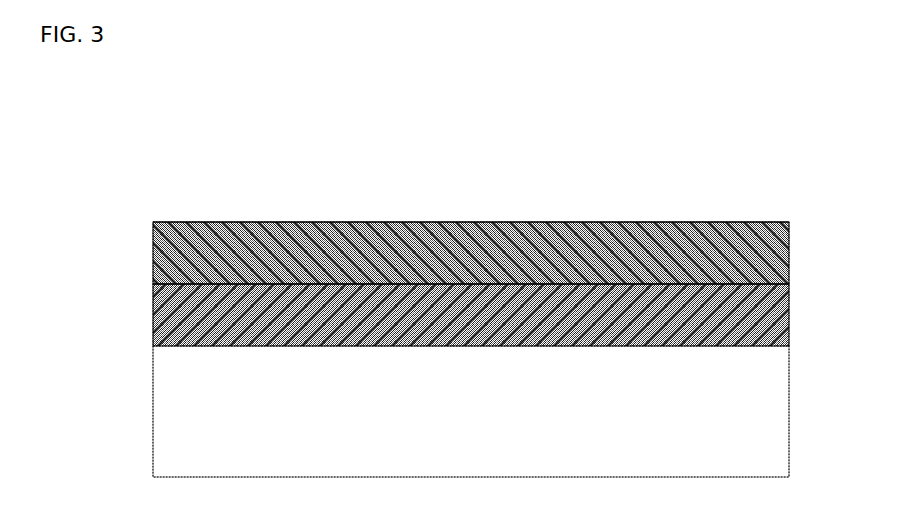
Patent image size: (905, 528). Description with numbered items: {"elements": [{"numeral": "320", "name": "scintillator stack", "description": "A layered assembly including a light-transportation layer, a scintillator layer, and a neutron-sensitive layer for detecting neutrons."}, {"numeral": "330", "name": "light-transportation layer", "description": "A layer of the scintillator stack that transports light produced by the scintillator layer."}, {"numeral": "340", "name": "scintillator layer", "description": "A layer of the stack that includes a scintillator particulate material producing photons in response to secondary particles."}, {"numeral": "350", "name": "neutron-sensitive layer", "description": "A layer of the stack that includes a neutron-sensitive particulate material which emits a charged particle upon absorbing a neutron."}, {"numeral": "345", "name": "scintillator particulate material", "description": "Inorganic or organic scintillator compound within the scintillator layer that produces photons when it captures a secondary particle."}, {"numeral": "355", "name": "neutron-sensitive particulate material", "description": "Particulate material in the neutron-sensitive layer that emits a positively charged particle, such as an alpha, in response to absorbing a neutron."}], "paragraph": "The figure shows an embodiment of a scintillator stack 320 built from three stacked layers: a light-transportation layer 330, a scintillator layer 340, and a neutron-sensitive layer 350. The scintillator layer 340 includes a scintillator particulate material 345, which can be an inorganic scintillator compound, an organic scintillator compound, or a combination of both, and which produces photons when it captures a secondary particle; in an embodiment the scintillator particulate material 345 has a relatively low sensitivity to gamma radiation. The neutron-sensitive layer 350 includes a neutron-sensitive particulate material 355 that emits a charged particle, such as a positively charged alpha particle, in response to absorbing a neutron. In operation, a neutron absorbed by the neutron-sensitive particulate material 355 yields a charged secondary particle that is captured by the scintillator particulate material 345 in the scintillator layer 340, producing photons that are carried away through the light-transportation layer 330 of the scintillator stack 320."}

The layered structure 320 is at (175, 196).
The substrate layer 330 is at (153, 393).
The first hatched layer 340 is at (153, 310).
The second hatched layer 350 is at (153, 239).
The interface surface of first layer 345 is at (790, 303).
The top surface of second layer 355 is at (790, 237).